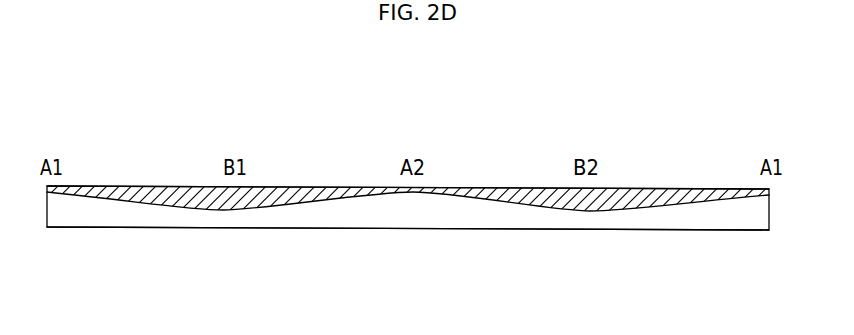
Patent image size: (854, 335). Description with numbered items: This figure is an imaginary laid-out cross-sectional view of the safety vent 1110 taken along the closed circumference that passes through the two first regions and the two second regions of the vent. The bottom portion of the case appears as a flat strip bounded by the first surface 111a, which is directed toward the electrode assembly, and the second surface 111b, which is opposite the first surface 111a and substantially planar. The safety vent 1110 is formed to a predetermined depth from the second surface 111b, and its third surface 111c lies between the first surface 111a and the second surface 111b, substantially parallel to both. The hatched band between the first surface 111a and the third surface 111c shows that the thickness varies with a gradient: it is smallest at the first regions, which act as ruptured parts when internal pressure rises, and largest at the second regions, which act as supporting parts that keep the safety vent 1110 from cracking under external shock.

The safety vent 1110 is at (525, 160).
The first surface 111a is at (680, 189).
The second surface 111b is at (680, 232).
The third surface 111c is at (612, 210).